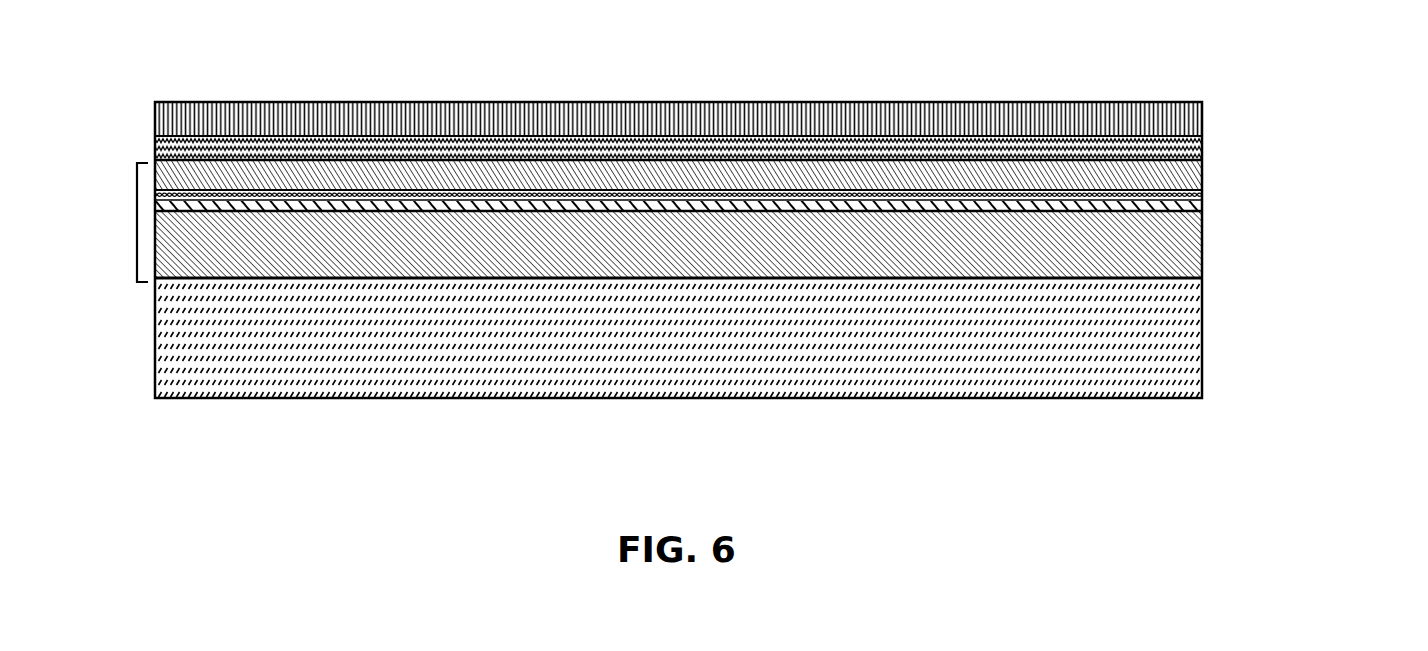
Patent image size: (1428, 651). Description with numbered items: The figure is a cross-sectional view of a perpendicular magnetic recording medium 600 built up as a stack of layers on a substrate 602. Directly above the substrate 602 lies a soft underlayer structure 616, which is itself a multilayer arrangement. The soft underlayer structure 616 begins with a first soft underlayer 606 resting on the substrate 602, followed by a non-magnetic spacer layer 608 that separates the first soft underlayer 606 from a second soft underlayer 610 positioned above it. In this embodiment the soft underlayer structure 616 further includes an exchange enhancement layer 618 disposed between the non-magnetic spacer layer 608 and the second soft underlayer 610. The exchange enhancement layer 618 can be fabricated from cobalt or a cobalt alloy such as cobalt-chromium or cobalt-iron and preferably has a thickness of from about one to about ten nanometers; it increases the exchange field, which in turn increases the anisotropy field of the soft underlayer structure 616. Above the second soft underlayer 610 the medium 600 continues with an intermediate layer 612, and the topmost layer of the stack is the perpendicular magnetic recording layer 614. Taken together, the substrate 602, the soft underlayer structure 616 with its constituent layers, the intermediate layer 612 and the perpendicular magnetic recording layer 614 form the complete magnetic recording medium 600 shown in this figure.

The magnetic recording medium 600 is at (688, 96).
The substrate 602 is at (696, 398).
The first soft underlayer 606 is at (1202, 258).
The non-magnetic spacer layer 608 is at (1202, 204).
The second soft underlayer 610 is at (1202, 165).
The intermediate layer 612 is at (1202, 143).
The perpendicular magnetic recording layer 614 is at (1202, 122).
The soft underlayer structure 616 is at (137, 217).
The exchange enhancement layer 618 is at (1202, 193).